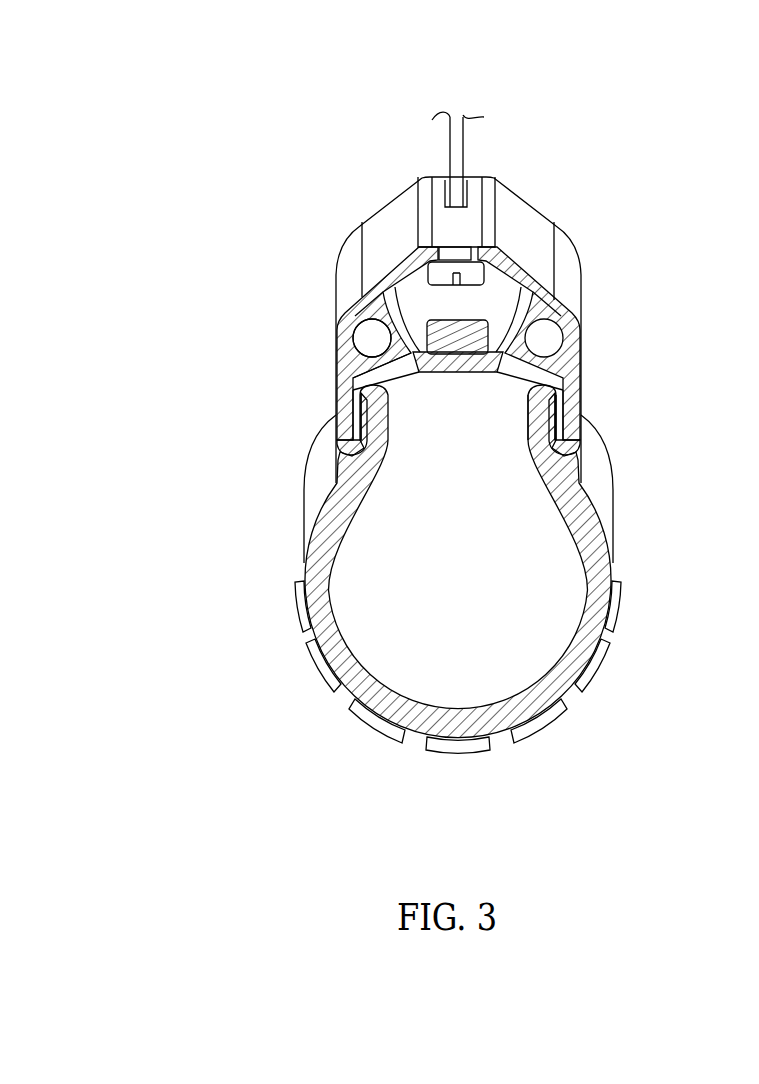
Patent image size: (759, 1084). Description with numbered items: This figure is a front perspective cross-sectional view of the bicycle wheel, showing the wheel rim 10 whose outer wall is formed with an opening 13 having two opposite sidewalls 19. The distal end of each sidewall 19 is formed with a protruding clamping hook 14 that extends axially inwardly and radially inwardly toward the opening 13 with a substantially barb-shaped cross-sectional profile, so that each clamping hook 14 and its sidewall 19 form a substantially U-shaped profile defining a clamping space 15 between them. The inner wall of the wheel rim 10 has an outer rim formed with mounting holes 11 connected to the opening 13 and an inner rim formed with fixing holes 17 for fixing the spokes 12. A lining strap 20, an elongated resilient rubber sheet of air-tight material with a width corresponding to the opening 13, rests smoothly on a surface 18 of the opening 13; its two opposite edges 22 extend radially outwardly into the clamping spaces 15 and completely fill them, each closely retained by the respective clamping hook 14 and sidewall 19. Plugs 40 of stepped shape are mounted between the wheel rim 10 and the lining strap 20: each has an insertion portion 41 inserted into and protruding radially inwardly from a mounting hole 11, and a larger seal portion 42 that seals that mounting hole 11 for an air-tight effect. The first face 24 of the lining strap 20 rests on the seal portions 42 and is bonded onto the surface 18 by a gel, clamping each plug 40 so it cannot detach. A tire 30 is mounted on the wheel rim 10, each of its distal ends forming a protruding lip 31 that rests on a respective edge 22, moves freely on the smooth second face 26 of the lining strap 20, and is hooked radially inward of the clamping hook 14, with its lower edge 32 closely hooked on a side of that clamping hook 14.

The wheel rim 10 is at (534, 199).
The mounting holes 11 is at (580, 358).
The spokes 12 is at (452, 153).
The opening 13 is at (477, 402).
The clamping hook 14 is at (613, 490).
The clamping space 15 is at (305, 480).
The fixing holes 17 is at (463, 253).
The surface 18 is at (398, 378).
The sidewalls 19 is at (335, 400).
The lining strap 20 is at (343, 390).
The edges 22 is at (562, 436).
The first face 24 is at (280, 490).
The second face 26 is at (503, 381).
The tire 30 is at (316, 693).
The protruding lip 31 is at (367, 415).
The lower edge 32 is at (526, 436).
The plugs 40 is at (497, 317).
The insertion portion 41 is at (396, 319).
The seal portion 42 is at (362, 348).